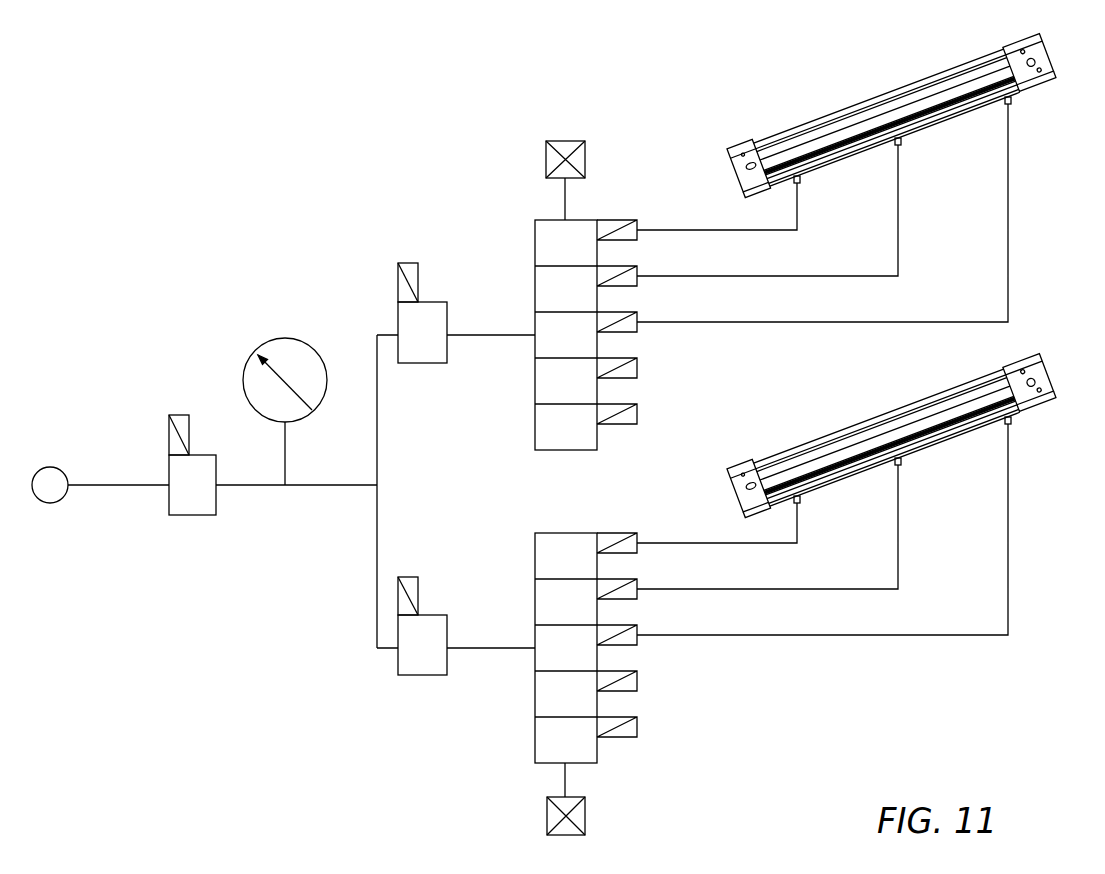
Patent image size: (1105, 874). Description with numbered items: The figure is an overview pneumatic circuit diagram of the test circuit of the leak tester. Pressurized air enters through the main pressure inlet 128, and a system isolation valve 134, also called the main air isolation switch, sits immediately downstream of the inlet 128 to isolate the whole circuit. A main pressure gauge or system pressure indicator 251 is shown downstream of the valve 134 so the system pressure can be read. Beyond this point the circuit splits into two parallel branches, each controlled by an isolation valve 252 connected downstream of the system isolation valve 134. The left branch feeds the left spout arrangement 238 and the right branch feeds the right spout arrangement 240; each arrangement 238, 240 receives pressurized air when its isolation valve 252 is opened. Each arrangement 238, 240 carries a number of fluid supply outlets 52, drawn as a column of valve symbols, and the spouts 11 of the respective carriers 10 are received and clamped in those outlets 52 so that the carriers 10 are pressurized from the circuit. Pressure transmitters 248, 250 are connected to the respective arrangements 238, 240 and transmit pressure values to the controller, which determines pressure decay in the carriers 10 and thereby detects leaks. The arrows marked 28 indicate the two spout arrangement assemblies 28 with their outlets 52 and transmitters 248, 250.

The carrier 10 is at (912, 262).
The spout 11 is at (801, 181).
The ink supply sub-assembly 28 is at (528, 191).
The fluid supply outlet 52 is at (617, 220).
The main pressure inlet 128 is at (60, 468).
The system isolation valve 134 is at (192, 522).
The left spout arrangement 238 is at (535, 255).
The right spout arrangement 240 is at (535, 750).
The pressure transmitter 248 is at (567, 140).
The pressure transmitter 250 is at (547, 817).
The pressure gauge 251 is at (287, 340).
The left isolation valve 252 is at (428, 363).